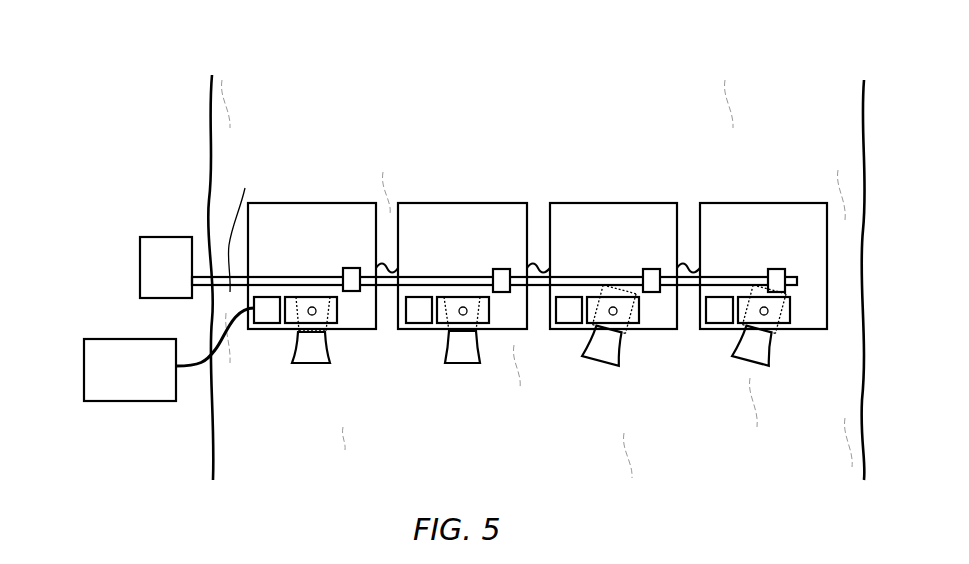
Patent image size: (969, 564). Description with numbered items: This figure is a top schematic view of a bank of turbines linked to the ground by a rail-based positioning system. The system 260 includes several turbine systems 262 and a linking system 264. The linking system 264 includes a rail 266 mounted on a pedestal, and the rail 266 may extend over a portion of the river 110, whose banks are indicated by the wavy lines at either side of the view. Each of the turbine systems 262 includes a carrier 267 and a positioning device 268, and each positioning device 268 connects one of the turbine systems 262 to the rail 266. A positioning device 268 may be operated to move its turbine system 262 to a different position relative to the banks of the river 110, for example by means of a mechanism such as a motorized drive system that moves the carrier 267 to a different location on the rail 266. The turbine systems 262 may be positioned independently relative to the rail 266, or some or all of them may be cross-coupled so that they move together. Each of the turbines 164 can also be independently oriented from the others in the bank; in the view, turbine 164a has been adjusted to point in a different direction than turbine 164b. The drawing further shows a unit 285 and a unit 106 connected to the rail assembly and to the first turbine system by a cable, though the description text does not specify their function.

The system 260 is at (356, 56).
The turbine systems 262 is at (311, 177).
The linking system 264 is at (200, 255).
The rail 266 is at (243, 265).
The carrier 267 is at (303, 252).
The positioning device 268 is at (350, 268).
The power supply 285 is at (183, 275).
The controller 106 is at (148, 379).
The turbines 164 is at (306, 378).
The turbine 164b is at (438, 384).
The turbine 164a is at (596, 379).
The river 110 is at (718, 478).